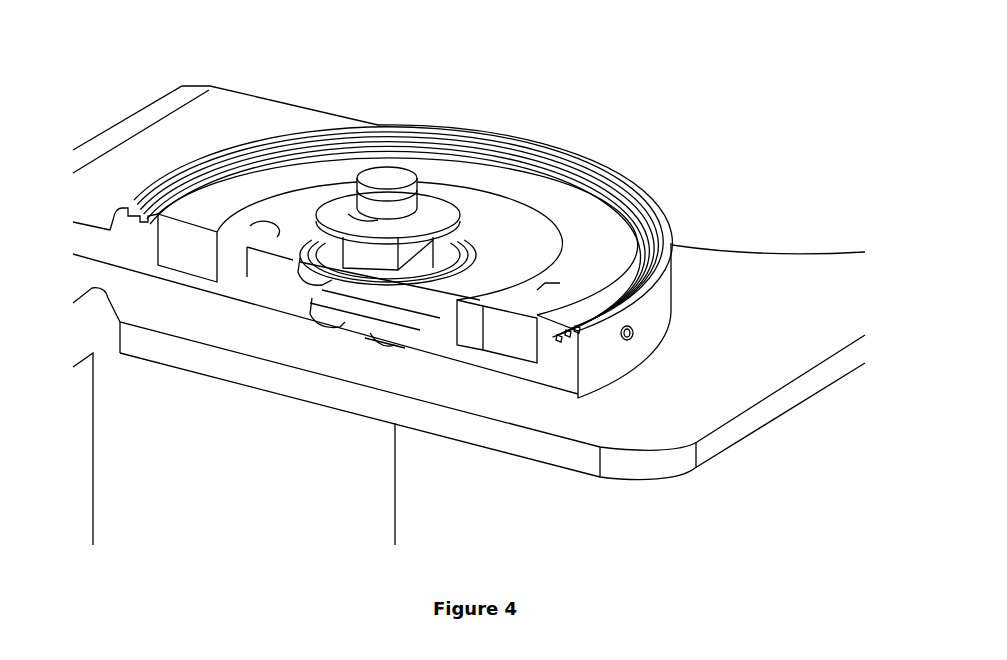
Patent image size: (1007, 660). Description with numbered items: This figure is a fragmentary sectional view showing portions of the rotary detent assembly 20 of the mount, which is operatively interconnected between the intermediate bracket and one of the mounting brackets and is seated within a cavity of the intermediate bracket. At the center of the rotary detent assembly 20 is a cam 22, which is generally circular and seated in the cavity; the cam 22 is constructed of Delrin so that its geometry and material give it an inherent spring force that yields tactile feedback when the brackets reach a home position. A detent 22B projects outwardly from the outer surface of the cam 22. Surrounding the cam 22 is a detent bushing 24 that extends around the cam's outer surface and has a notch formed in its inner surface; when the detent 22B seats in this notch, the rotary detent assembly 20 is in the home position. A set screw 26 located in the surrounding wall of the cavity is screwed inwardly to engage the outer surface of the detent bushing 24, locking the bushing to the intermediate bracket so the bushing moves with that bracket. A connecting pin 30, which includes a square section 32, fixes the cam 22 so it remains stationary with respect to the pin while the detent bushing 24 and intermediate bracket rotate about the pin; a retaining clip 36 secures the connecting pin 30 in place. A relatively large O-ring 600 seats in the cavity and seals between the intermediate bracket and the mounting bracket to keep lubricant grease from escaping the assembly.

The rotary detent assembly 20 is at (655, 123).
The cam 22 is at (520, 211).
The detent 22B is at (543, 272).
The detent bushing 24 is at (503, 332).
The set screw 26 is at (637, 345).
The connecting pin 30 is at (387, 178).
The square section 32 is at (372, 249).
The retaining clip 36 is at (437, 198).
The O-ring 600 is at (130, 204).